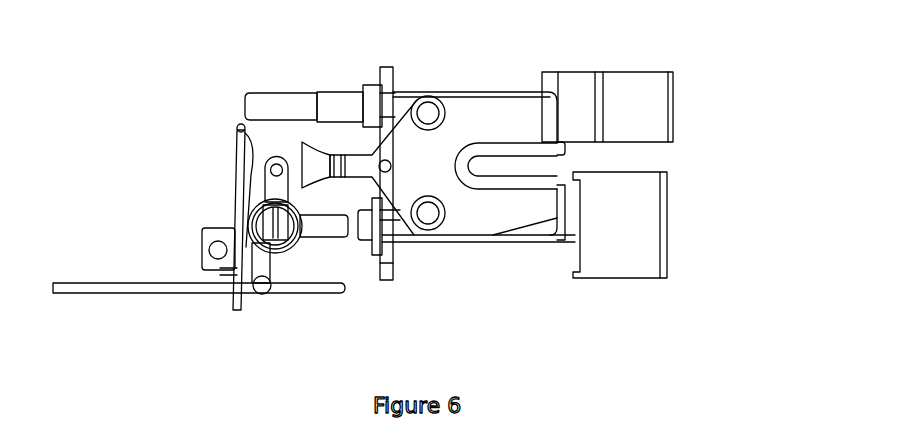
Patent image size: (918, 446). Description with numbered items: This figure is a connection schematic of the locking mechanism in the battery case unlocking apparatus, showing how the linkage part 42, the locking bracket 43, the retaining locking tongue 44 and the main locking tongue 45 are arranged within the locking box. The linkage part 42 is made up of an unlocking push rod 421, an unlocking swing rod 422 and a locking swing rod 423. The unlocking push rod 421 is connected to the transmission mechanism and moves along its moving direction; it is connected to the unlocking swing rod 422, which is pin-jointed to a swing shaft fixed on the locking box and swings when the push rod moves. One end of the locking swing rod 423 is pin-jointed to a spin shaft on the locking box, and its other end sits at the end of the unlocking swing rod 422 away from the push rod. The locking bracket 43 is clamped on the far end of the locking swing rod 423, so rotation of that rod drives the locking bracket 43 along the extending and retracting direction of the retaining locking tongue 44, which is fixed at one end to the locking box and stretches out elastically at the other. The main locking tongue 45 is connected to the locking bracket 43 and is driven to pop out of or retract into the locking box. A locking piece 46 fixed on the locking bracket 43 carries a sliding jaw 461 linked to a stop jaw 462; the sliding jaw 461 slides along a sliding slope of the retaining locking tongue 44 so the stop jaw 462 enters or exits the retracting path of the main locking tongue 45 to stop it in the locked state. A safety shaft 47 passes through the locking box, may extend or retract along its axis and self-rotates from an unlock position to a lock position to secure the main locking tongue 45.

The linkage part 42 is at (194, 215).
The unlocking push rod 421 is at (163, 283).
The unlocking swing rod 422 is at (237, 198).
The locking swing rod 423 is at (266, 152).
The locking bracket 43 is at (537, 230).
The retaining locking tongue 44 is at (648, 117).
The main locking tongue 45 is at (648, 220).
The locking piece 46 is at (531, 175).
The sliding jaw 461 is at (563, 130).
The stop jaw 462 is at (560, 203).
The safety shaft 47 is at (273, 242).